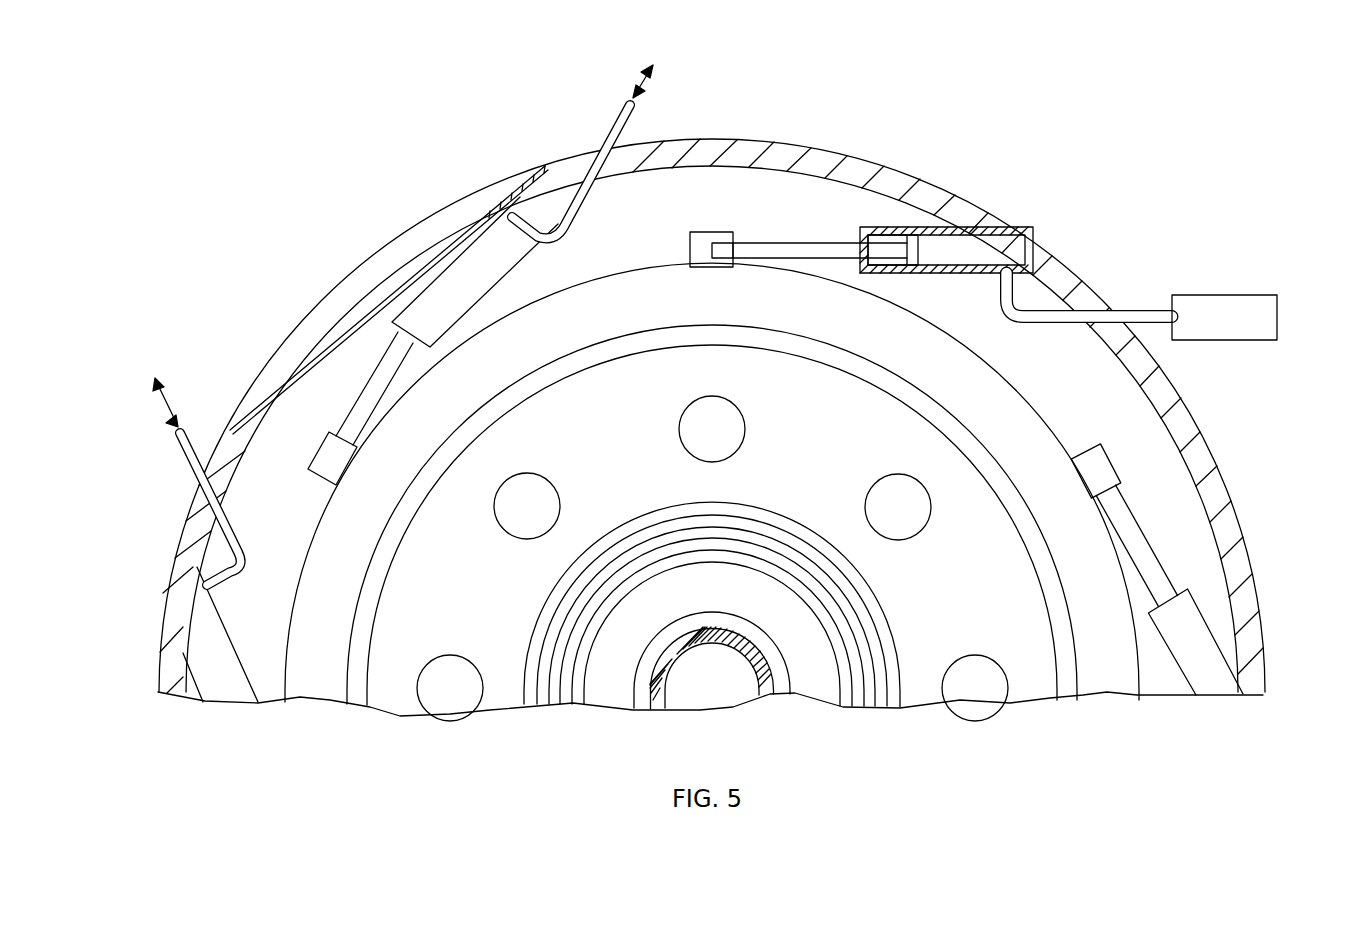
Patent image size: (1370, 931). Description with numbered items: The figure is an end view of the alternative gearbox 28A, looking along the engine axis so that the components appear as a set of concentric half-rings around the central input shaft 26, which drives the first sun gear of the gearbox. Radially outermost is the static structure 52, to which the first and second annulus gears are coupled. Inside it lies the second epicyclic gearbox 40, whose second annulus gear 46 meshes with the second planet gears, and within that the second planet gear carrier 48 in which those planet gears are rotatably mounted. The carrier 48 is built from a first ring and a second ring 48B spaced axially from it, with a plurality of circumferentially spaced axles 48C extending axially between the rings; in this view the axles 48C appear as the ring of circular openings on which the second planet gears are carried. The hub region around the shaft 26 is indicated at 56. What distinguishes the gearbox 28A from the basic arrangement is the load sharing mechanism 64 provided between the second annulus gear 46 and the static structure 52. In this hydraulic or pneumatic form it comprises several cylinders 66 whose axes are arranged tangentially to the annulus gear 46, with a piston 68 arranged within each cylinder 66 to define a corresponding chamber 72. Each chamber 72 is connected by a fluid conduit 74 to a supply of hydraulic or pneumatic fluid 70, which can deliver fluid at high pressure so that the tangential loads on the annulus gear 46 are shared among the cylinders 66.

The shaft 26 is at (750, 655).
The gearbox 28A is at (1117, 230).
The second epicyclic gearbox 40 is at (742, 201).
The second annulus gear 46 is at (1035, 440).
The second planet gear carrier 48 is at (1000, 585).
The second ring 48B is at (1030, 640).
The axles 48C is at (453, 670).
The static structure 52 is at (1068, 276).
The hub 56 is at (808, 673).
The load sharing mechanism 64 is at (1030, 236).
The cylinders 66 is at (465, 242).
The pistons 68 is at (818, 243).
The supply of hydraulic or pneumatic fluid 70 is at (644, 88).
The chamber 72 is at (930, 240).
The fluid conduits 74 is at (572, 198).